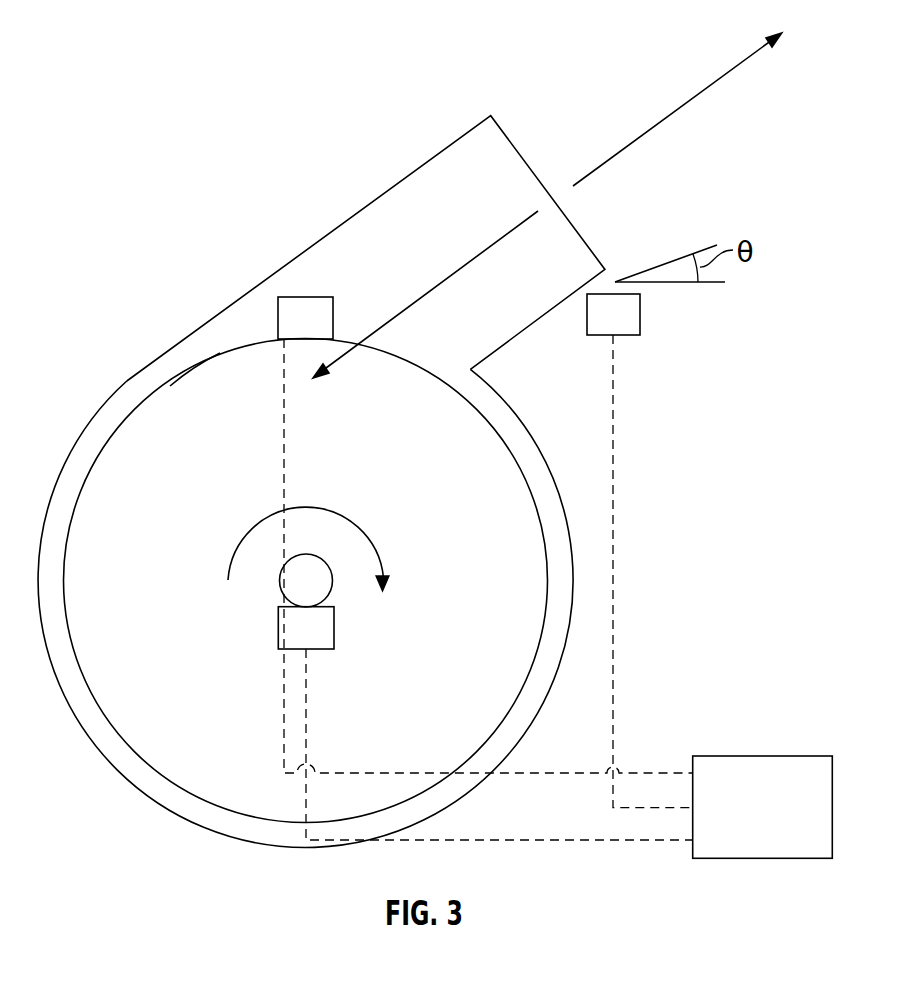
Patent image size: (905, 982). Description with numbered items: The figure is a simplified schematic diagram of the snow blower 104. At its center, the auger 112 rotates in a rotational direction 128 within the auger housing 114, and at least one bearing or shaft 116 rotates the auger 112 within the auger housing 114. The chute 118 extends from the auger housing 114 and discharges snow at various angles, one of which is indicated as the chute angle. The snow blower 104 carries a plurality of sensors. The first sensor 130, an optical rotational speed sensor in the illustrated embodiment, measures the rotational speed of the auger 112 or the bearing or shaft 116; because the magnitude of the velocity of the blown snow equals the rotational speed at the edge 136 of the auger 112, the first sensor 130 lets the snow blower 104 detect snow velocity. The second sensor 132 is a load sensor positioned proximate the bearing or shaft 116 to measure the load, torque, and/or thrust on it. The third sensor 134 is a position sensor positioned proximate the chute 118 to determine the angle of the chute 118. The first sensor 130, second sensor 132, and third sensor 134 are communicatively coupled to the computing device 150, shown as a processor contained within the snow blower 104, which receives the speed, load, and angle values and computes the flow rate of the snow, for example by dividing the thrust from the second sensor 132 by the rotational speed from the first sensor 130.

The snow blower 104 is at (250, 259).
The auger 112 is at (503, 662).
The auger housing 114 is at (572, 547).
The bearing or shaft 116 is at (297, 587).
The chute 118 is at (580, 232).
The rotational direction 128 is at (273, 510).
The first sensor 130 is at (278, 318).
The second sensor 132 is at (278, 625).
The third sensor 134 is at (640, 313).
The edge 136 is at (195, 367).
The computing device 150 is at (784, 820).